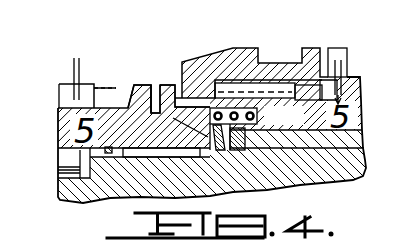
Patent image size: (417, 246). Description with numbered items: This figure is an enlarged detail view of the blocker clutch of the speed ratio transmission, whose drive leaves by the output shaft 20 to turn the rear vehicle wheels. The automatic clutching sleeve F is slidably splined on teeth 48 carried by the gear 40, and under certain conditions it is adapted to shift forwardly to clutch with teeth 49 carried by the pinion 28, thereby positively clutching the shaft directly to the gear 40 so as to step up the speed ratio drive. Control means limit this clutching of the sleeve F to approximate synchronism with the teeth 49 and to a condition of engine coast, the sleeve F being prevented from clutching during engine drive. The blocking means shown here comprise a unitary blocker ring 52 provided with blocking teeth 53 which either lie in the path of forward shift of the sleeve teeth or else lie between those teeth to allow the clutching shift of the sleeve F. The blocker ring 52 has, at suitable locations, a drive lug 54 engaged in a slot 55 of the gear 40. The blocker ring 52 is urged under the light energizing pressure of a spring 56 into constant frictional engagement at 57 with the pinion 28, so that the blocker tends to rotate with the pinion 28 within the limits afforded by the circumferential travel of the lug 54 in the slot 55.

The output shaft 20 is at (341, 182).
The pinion 28 is at (60, 88).
The teeth 49 is at (146, 69).
The blocking teeth 53 is at (163, 84).
The drive lug 54 is at (189, 78).
The automatic clutching sleeve F is at (240, 58).
The slot 55 is at (213, 100).
The teeth 48 is at (272, 88).
The gear 40 is at (348, 52).
The spring 56 is at (254, 117).
The blocker ring 52 is at (167, 149).
The frictional engagement 57 is at (183, 150).